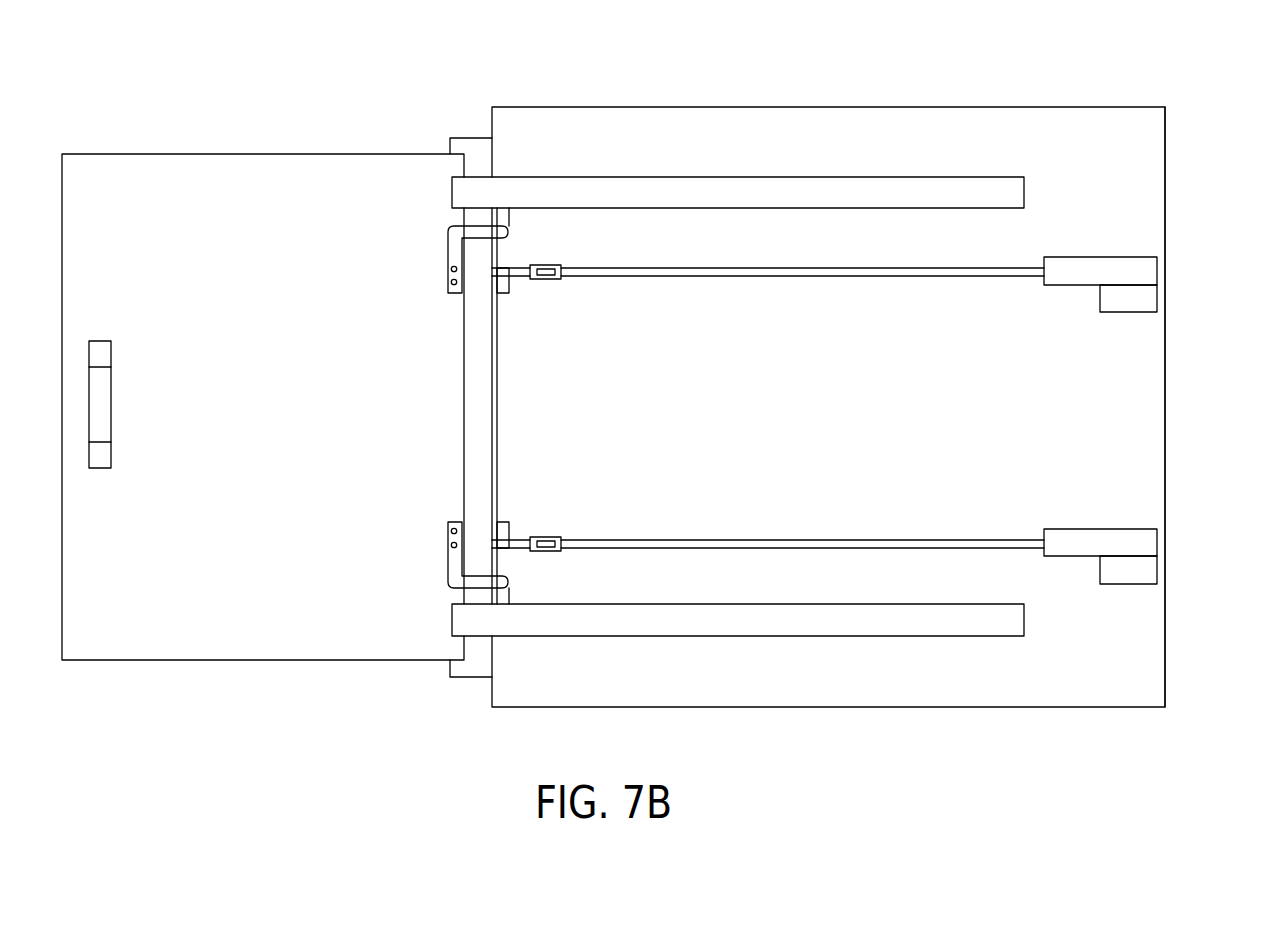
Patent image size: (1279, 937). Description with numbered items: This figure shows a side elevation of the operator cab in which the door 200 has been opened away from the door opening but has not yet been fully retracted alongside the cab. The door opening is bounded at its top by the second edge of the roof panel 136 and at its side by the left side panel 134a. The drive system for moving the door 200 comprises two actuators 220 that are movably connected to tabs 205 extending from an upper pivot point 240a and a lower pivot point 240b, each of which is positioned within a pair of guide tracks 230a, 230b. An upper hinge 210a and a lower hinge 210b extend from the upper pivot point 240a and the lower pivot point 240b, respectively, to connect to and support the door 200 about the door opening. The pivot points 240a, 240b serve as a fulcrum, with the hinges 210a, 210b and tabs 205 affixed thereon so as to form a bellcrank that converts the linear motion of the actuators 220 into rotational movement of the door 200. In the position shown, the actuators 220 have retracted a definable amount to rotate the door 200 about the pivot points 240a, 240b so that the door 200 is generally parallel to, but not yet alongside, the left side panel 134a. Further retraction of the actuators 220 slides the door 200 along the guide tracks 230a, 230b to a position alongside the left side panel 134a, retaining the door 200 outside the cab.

The door 200 is at (203, 214).
The roof panel 136 is at (762, 107).
The left side panel 134a is at (1120, 165).
The upper guide track 230a is at (895, 196).
The lower guide track 230b is at (908, 618).
The upper hinge 210a is at (457, 250).
The lower hinge 210b is at (455, 563).
The upper pivot point 240a is at (502, 295).
The lower pivot point 240b is at (503, 520).
The tab 205 is at (522, 272).
The actuator 220 is at (1072, 273).